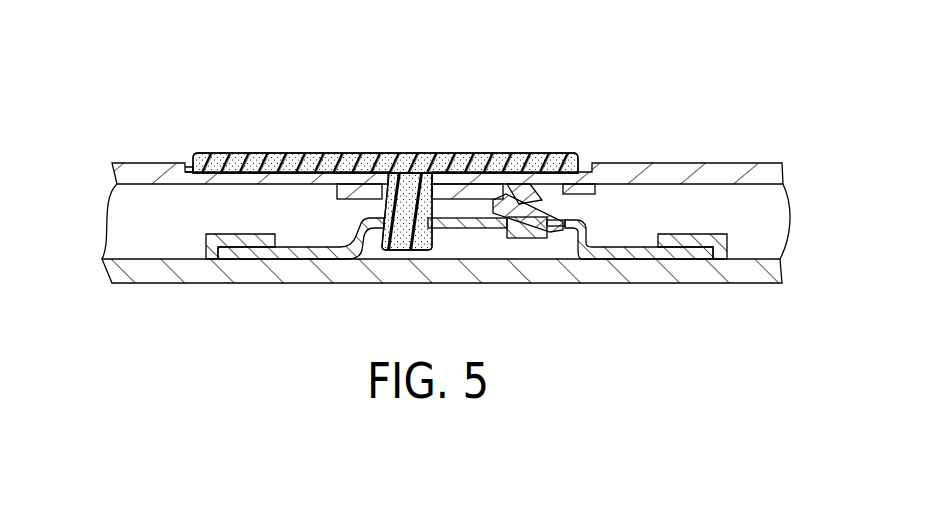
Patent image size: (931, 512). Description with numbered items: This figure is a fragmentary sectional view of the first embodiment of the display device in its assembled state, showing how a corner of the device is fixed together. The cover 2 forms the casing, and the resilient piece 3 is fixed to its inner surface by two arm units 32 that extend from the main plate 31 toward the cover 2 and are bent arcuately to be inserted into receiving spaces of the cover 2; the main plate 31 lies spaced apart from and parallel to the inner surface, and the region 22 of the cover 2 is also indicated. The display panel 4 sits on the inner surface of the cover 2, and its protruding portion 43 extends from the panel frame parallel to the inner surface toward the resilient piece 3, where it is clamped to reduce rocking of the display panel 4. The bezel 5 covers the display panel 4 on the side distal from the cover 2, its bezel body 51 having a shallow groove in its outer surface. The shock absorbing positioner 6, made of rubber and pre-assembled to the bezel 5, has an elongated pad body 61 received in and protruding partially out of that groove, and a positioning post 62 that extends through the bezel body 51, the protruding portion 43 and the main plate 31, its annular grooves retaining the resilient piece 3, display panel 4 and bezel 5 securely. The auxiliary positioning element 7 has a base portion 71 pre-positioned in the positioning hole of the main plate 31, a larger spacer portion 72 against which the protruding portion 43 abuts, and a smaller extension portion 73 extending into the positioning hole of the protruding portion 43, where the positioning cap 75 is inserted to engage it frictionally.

The cover 2 is at (163, 283).
The resilient piece 3 is at (466, 271).
The display panel 4 is at (133, 218).
The bezel 5 is at (135, 158).
The shock absorbing positioner 6 is at (385, 187).
The auxiliary positioning element 7 is at (592, 202).
The lower substrate surface 22 is at (713, 230).
The main plate 31 is at (473, 230).
The arm units 32 is at (300, 250).
The protruding portion 43 is at (600, 190).
The bezel body 51 is at (168, 178).
The pad body 61 is at (328, 155).
The positioning post 62 is at (403, 250).
The base portion 71 is at (528, 240).
The spacer portion 72 is at (562, 213).
The extension portion 73 is at (528, 186).
The positioning cap 75 is at (549, 195).